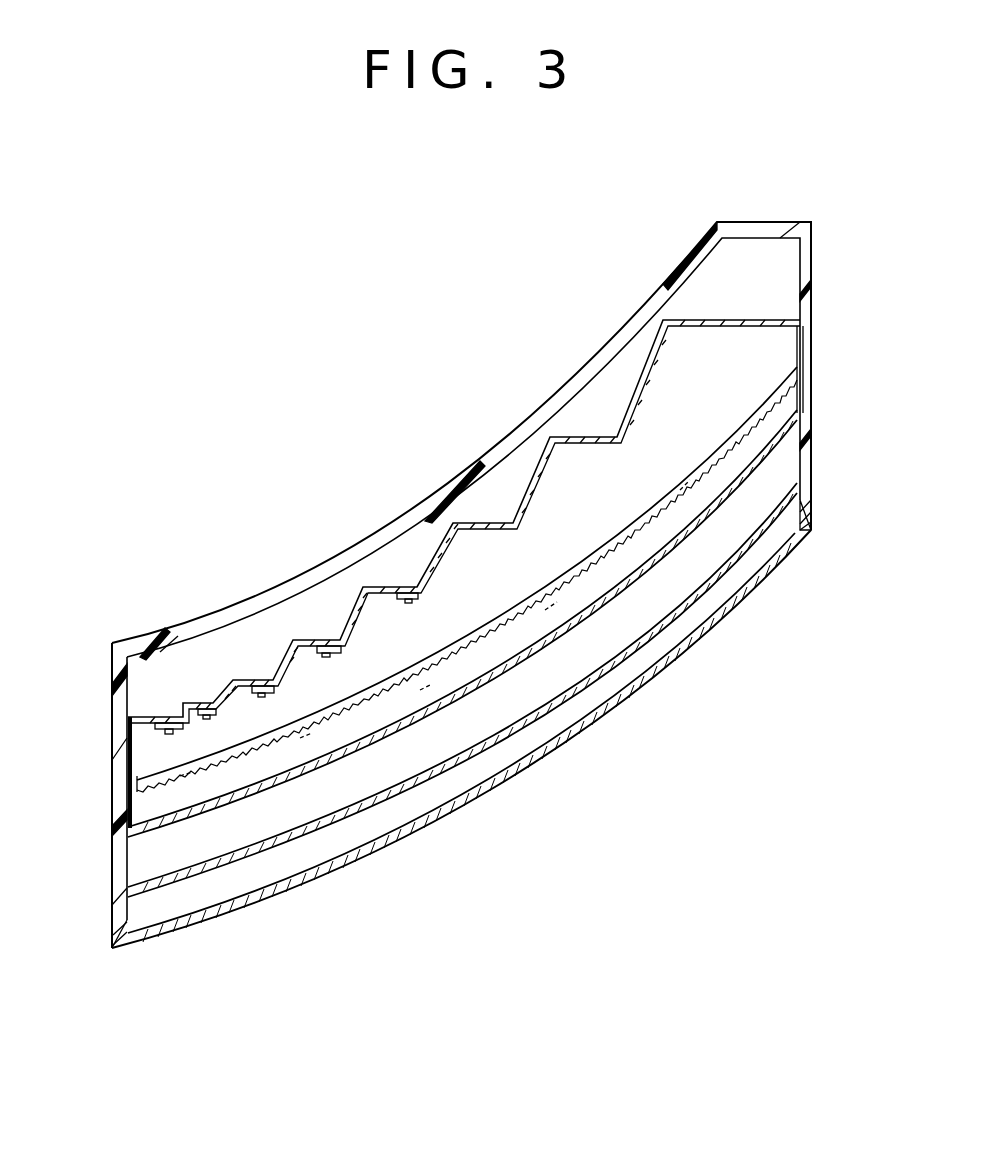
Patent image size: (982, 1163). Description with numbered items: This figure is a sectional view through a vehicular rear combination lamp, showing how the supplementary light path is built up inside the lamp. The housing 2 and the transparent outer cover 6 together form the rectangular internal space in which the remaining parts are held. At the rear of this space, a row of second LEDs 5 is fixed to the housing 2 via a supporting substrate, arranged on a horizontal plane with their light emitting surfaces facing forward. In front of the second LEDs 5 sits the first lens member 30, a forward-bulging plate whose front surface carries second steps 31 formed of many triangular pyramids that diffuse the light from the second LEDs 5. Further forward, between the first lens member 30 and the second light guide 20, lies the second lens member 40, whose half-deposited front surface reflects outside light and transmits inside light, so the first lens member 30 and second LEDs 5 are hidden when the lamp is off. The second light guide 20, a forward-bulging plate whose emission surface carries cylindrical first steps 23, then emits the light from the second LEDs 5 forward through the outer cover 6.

The housing 2 is at (120, 862).
The second LEDs 5 is at (170, 722).
The outer cover 6 is at (700, 643).
The second light guide 20 is at (350, 815).
The first steps 23 is at (255, 855).
The first lens member 30 is at (557, 581).
The second steps 31 is at (607, 557).
The second lens member 40 is at (440, 703).